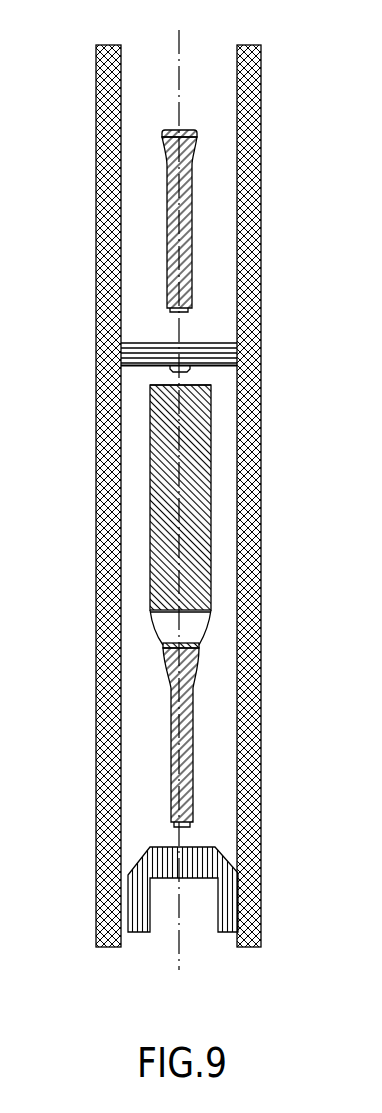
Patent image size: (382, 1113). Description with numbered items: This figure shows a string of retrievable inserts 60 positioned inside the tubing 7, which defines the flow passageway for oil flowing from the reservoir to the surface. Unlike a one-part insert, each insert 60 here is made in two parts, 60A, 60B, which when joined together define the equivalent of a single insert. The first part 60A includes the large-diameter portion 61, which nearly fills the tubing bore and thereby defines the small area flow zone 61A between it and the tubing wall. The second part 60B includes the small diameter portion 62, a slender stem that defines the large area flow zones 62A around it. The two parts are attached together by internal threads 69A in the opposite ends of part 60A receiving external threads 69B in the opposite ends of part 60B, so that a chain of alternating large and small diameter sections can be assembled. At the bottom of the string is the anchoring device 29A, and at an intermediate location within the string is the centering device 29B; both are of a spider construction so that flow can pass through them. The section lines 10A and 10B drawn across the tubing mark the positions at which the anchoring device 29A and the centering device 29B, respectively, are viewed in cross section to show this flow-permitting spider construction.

The tubing 7 is at (119, 677).
The section line 10a 10A is at (85, 917).
The section line 10b 10B is at (82, 353).
The anchoring device 29A is at (216, 861).
The centering device 29B is at (213, 343).
The inserts 60 is at (145, 690).
The first insert part 60A is at (189, 516).
The second insert part 60B is at (249, 205).
The large-diameter portion 61 is at (150, 517).
The small area flow zone 61A is at (137, 585).
The small diameter portion 62 is at (170, 768).
The large area flow zone 62A is at (146, 829).
The internal threads 69A is at (211, 386).
The external threads 69B is at (184, 132).